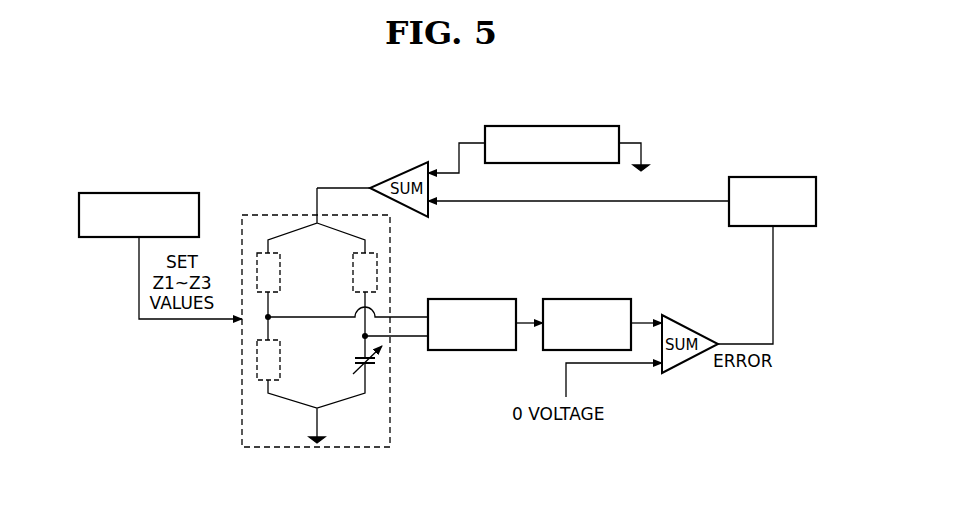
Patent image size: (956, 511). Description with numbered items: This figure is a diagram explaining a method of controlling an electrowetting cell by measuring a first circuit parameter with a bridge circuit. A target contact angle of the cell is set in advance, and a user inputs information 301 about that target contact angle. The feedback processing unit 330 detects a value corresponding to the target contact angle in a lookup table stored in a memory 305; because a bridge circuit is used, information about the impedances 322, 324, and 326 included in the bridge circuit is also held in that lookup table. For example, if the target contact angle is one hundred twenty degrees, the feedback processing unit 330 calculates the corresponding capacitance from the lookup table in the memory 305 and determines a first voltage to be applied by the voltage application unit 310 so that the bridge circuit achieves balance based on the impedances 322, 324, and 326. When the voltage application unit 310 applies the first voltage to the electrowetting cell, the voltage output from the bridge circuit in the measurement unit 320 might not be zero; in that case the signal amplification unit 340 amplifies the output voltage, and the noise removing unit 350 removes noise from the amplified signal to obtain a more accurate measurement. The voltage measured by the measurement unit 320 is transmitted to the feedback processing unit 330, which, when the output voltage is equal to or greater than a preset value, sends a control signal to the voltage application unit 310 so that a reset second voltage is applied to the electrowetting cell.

The information about the set target contact angle 301 is at (139, 184).
The memory 305 is at (139, 215).
The voltage application unit 310 is at (538, 149).
The measurement unit 320 is at (390, 247).
The impedance 322 is at (256, 266).
The impedance 324 is at (257, 370).
The impedance 326 is at (377, 277).
The feedback processing unit 330 is at (622, 260).
The signal amplification unit 340 is at (485, 324).
The noise removing unit 350 is at (602, 324).